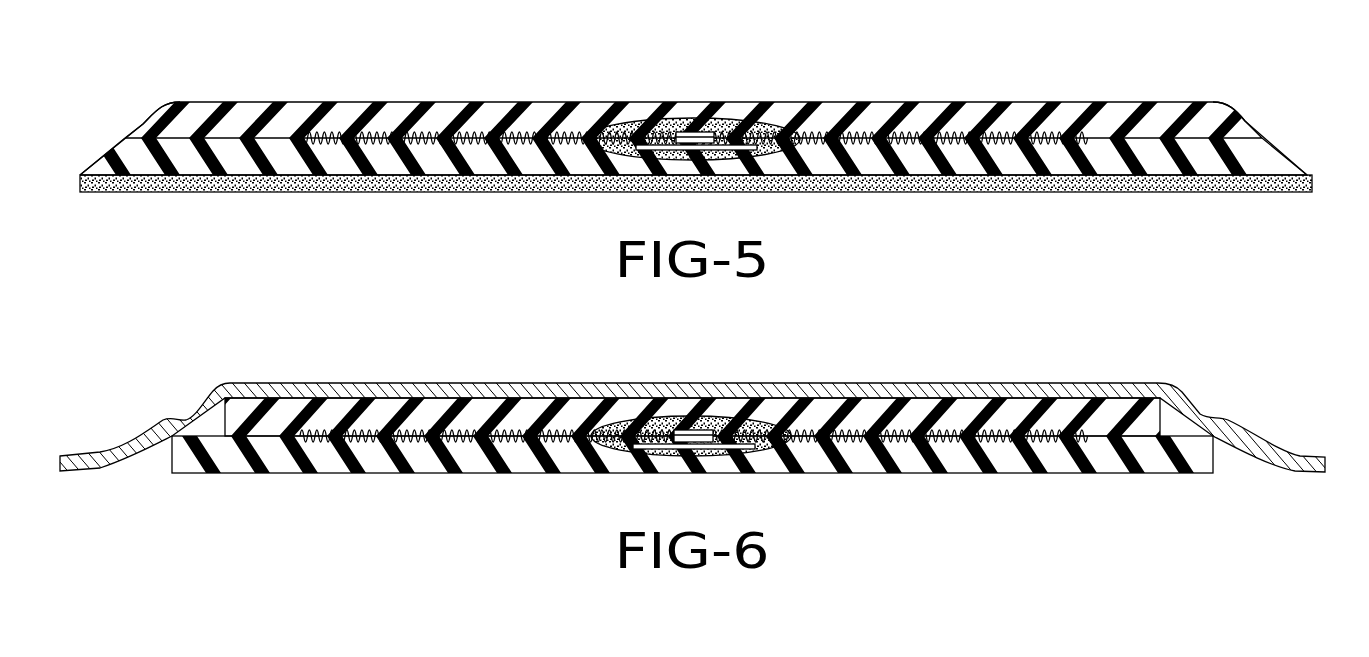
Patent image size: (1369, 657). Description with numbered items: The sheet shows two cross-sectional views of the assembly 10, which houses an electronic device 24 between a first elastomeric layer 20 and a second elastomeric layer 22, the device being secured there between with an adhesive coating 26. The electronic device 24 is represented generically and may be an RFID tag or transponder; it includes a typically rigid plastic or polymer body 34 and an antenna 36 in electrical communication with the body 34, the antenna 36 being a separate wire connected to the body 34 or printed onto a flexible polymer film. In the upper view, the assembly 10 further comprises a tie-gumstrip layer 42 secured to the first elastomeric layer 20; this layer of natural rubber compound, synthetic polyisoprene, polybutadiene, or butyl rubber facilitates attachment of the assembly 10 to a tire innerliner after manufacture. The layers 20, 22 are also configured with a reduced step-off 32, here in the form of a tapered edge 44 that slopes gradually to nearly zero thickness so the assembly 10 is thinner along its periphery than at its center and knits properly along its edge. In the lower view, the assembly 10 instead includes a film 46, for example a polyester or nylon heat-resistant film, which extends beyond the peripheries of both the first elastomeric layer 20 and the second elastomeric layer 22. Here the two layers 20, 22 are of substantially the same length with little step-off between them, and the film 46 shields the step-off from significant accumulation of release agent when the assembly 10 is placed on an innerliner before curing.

In FIG. 5, the assembly 10 is at (200, 32).
In FIG. 6, the assembly 10 is at (245, 328).
In FIG. 5, the first elastomeric layer 20 is at (1280, 152).
In FIG. 6, the first elastomeric layer 20 is at (1097, 473).
In FIG. 5, the second elastomeric layer 22 is at (152, 118).
In FIG. 6, the second elastomeric layer 22 is at (1160, 417).
In FIG. 5, the electronic device 24 is at (728, 122).
In FIG. 6, the electronic device 24 is at (722, 418).
In FIG. 5, the adhesive coating 26 is at (637, 127).
In FIG. 6, the adhesive coating 26 is at (633, 423).
In FIG. 5, the reduced step-off 32 is at (95, 143).
In FIG. 5, the body 34 is at (683, 158).
In FIG. 6, the body 34 is at (694, 450).
In FIG. 5, the antenna 36 is at (876, 134).
In FIG. 6, the antenna 36 is at (873, 432).
In FIG. 5, the tie-gumstrip layer 42 is at (336, 190).
In FIG. 5, the tapered edge 44 is at (1263, 110).
In FIG. 6, the film 46 is at (1058, 383).